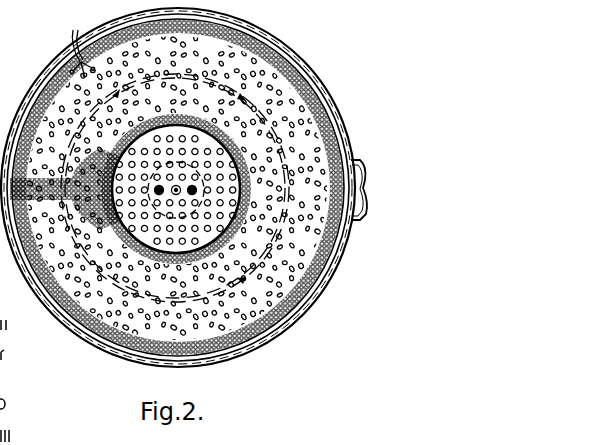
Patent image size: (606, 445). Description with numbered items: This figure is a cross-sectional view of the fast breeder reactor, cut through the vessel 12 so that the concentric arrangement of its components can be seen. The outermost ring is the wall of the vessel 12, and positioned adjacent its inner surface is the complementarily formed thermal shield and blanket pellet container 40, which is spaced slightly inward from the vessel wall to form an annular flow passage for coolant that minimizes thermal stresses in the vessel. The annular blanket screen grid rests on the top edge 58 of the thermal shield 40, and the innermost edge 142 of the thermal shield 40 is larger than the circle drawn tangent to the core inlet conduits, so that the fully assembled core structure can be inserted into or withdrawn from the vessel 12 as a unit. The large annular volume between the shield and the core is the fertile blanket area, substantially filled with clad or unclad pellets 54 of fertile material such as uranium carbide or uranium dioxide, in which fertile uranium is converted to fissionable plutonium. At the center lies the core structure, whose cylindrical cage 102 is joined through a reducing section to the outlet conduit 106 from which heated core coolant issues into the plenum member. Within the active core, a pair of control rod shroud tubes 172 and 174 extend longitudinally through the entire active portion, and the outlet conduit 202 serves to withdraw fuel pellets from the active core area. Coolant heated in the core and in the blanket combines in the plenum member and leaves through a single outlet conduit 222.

The vessel 12 is at (287, 369).
The thermal shield and blanket pellet container 40 is at (297, 313).
The pellets of fertile material 54 is at (78, 44).
The top edge of the thermal shield 58 is at (285, 201).
The cylindrical cage 102 is at (227, 144).
The outlet conduit 106 is at (176, 160).
The innermost edge of the thermal shield 142 is at (244, 97).
The control rod shroud tube 172 is at (159, 194).
The control rod shroud tube 174 is at (195, 193).
The outlet conduit 202 is at (176, 195).
The outlet conduit of the plenum member 222 is at (360, 180).